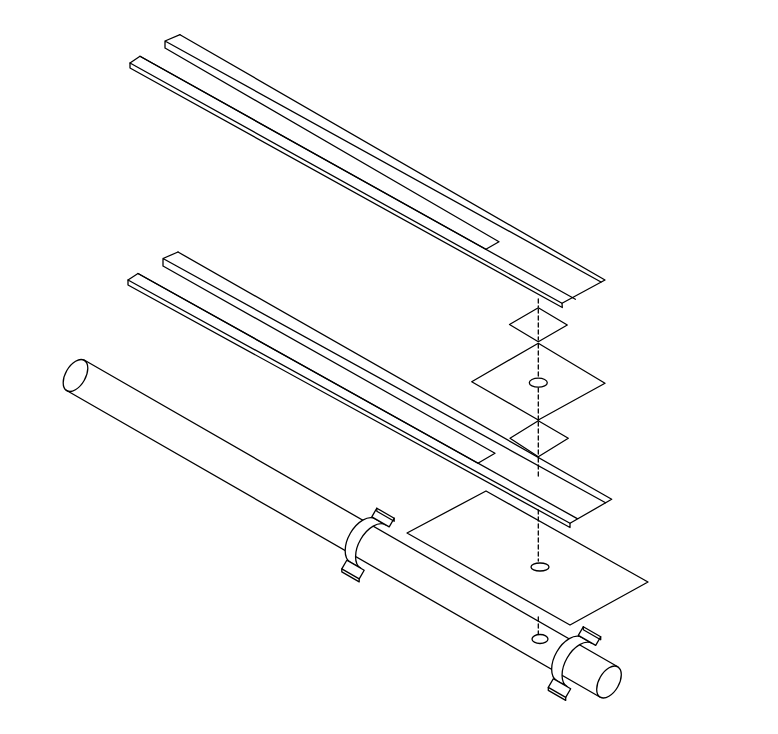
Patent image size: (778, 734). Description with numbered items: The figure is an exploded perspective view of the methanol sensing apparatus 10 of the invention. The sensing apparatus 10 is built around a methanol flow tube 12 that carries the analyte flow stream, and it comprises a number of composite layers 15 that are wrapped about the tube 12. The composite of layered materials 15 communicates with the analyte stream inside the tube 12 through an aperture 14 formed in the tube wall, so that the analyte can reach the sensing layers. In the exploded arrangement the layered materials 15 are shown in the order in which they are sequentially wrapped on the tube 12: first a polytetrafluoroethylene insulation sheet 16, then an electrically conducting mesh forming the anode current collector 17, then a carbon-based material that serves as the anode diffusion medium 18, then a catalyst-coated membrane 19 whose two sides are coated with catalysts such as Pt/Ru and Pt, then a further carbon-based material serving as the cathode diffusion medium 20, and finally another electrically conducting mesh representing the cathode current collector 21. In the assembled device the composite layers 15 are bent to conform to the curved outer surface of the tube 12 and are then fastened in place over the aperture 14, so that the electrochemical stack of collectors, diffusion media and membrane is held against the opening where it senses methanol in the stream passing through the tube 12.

The sensing apparatus 10 is at (626, 141).
The methanol flow tube 12 is at (207, 462).
The aperture 14 is at (549, 562).
The composite layers 15 is at (656, 299).
The polytetrafluoroethylene insulation sheet 16 is at (625, 598).
The anode current collector 17 is at (131, 272).
The anode diffusion medium 18 is at (560, 440).
The catalyst-coated membrane 19 is at (588, 370).
The cathode diffusion medium 20 is at (508, 323).
The cathode current collector 21 is at (369, 146).